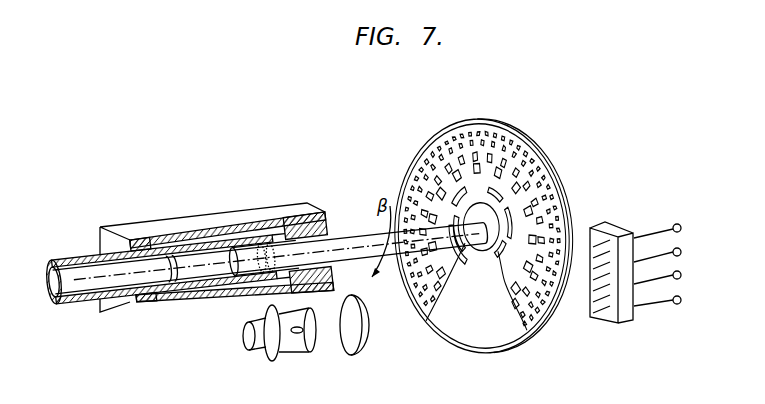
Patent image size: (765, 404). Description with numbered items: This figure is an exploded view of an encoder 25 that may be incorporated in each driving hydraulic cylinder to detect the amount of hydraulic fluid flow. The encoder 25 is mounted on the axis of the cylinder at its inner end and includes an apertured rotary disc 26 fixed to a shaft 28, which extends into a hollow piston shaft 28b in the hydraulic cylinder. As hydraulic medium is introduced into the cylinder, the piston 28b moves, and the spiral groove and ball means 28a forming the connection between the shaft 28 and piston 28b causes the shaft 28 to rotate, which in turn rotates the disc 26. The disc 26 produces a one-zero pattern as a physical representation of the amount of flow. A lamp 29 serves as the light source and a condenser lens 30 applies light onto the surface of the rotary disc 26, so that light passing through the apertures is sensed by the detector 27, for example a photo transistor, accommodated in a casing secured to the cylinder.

The encoder 25 is at (557, 164).
The apertured rotary disc 26 is at (467, 142).
The detector 27 is at (600, 314).
The shaft 28 is at (357, 233).
The spiral groove and ball means 28a is at (254, 252).
The hollow piston shaft 28b is at (191, 246).
The lamp 29 is at (298, 353).
The condenser lens 30 is at (370, 340).